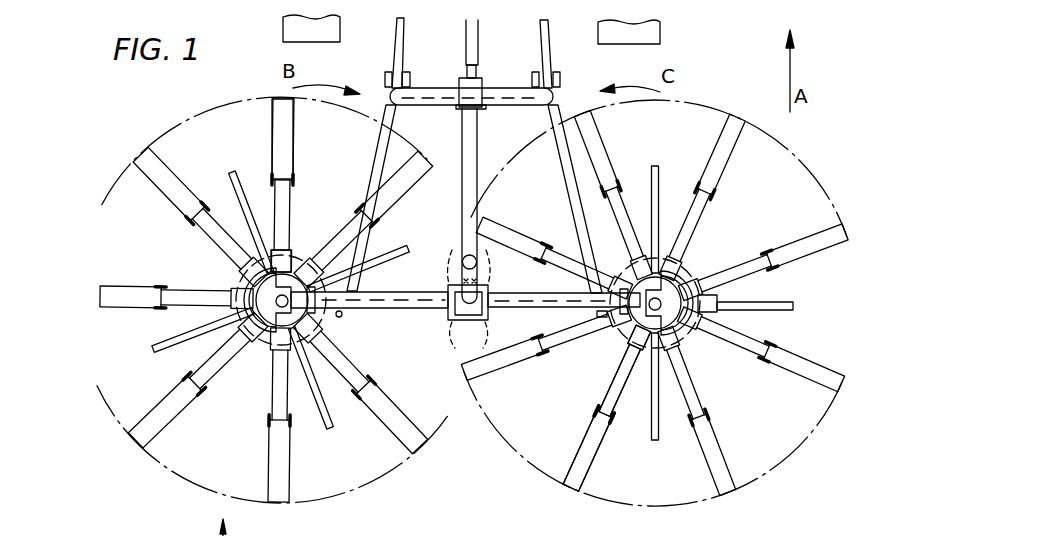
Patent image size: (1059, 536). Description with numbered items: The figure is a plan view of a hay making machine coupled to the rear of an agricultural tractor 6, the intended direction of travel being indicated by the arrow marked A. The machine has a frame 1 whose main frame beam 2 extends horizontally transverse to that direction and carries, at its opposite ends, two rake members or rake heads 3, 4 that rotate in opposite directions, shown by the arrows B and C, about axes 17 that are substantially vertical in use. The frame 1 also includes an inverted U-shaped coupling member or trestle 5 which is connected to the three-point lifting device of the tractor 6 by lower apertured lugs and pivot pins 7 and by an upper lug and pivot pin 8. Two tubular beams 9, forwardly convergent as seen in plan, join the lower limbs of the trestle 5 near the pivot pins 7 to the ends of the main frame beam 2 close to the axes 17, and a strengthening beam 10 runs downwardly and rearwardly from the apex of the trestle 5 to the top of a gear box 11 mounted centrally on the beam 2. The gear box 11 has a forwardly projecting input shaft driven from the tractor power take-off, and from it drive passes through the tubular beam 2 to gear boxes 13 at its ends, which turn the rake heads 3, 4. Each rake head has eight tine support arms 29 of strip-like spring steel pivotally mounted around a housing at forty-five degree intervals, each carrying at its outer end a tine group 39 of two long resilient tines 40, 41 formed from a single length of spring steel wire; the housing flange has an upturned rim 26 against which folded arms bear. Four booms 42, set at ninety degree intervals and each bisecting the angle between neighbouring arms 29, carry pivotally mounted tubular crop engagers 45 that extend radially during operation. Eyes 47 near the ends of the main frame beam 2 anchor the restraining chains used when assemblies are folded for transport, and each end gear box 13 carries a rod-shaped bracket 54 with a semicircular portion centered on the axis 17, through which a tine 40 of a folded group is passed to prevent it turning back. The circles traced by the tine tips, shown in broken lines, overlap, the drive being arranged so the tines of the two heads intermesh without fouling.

The frame 1 is at (417, 291).
The main frame beam 2 is at (396, 311).
The rake member or rake head 3 is at (175, 135).
The rake member or rake head 4 is at (809, 165).
The coupling member or trestle 5 is at (442, 88).
The agricultural tractor 6 is at (662, 32).
The pivot pins 7 is at (386, 80).
The pivot pin 8 is at (481, 79).
The tubular beams 9 is at (373, 147).
The strengthening beam 10 is at (462, 213).
The gear box 11 is at (480, 324).
The gear boxes 13 is at (292, 252).
The longitudinal axis 17 is at (336, 337).
The rim 26 is at (237, 348).
The tine support arms 29 is at (269, 384).
The tine groups 39 is at (162, 196).
The tine 40 is at (271, 127).
The tine 41 is at (296, 132).
The booms 42 is at (738, 357).
The crop engager 45 is at (234, 172).
The eye 47 is at (342, 316).
The bracket 54 is at (238, 283).